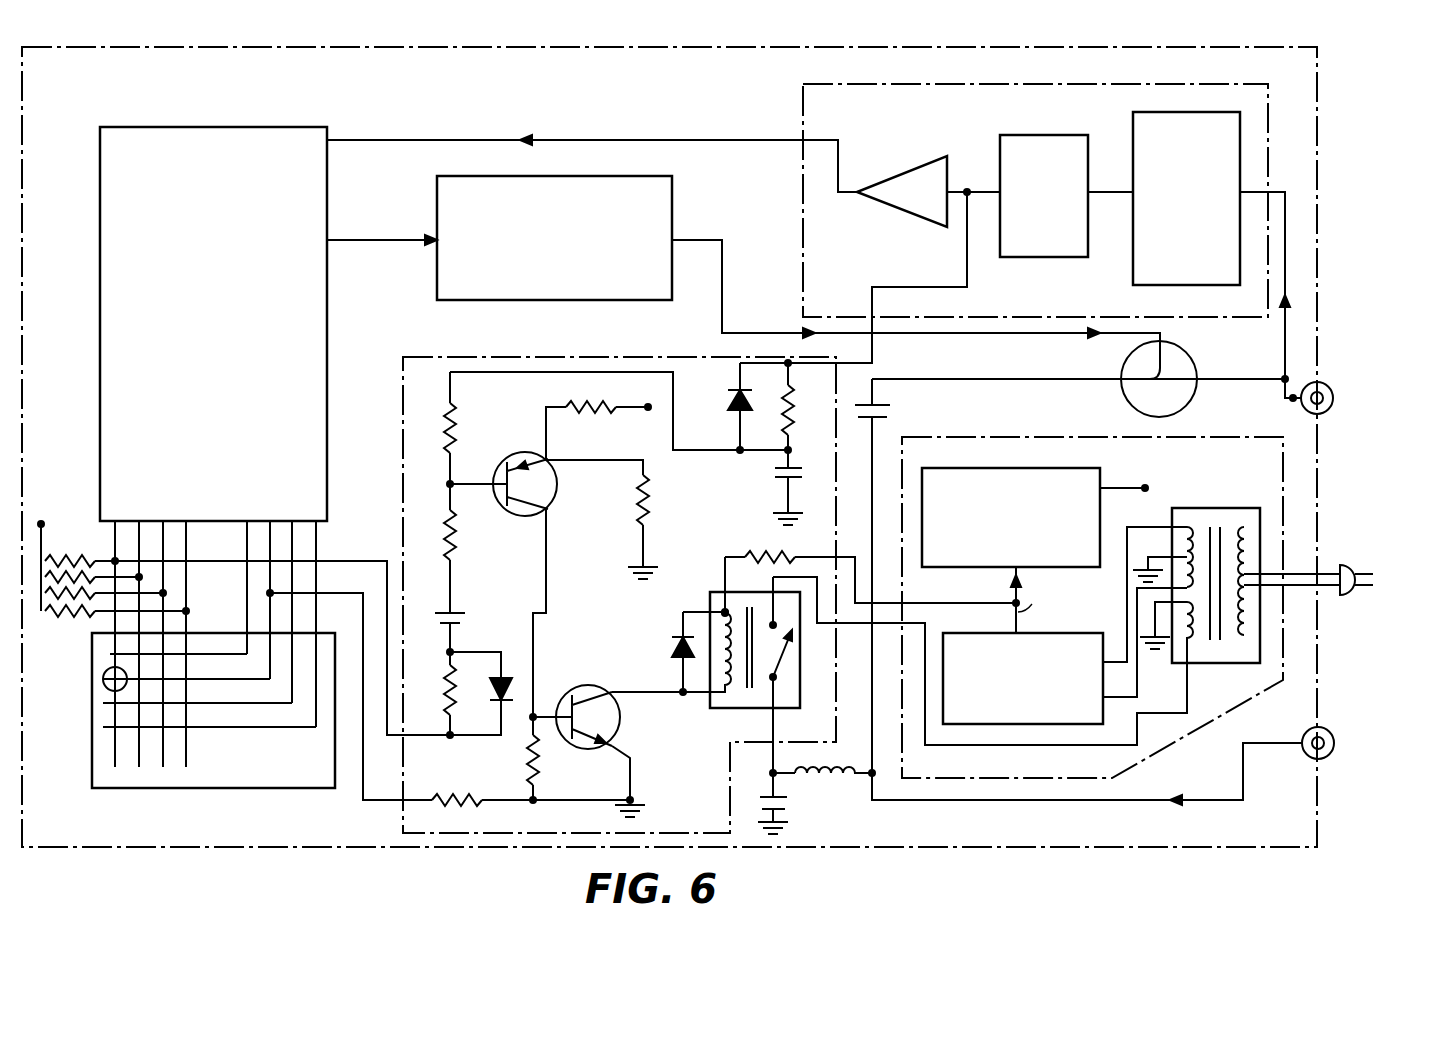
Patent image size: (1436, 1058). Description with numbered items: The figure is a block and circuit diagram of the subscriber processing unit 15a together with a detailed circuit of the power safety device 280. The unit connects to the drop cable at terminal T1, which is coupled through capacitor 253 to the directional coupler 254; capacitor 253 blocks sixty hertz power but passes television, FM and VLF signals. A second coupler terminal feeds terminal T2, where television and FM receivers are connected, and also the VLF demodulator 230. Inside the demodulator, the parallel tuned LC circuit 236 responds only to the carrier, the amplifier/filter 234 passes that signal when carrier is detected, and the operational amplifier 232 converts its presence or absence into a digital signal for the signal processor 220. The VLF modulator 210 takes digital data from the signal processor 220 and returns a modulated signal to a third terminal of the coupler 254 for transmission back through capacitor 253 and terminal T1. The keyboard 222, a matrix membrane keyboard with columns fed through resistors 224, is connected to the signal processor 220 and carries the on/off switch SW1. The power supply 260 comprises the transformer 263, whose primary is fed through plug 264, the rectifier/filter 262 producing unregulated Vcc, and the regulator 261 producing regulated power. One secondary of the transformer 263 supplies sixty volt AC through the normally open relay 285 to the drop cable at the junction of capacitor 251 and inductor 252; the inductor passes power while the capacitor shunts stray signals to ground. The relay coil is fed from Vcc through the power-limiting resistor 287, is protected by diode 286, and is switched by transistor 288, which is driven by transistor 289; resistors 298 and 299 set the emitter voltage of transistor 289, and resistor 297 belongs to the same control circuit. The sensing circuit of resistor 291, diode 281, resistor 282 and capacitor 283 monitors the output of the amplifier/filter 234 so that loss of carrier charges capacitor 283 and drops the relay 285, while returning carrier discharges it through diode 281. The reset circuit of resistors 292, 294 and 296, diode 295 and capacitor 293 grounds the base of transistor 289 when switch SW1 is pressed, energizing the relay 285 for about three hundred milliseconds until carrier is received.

The subscriber processing unit 15a is at (78, 852).
The signal processor 220 is at (174, 127).
The VLF modulator 210 is at (437, 205).
The VLF demodulator 230 is at (1022, 242).
The operational amplifier 232 is at (905, 212).
The amplifier/filter circuit 234 is at (1077, 258).
The parallel tuned LC circuit 236 is at (1242, 282).
The resistors 224 is at (72, 542).
The keyboard 222 is at (190, 728).
The on/off switch SW1 is at (103, 679).
The power safety device 280 is at (403, 385).
The diode 281 is at (737, 401).
The resistor 282 is at (791, 416).
The capacitor 283 is at (774, 470).
The relay 285 is at (748, 708).
The diode 286 is at (672, 649).
The power-limiting resistor 287 is at (768, 556).
The transistor 288 is at (600, 687).
The transistor 289 is at (556, 502).
The resistor 291 is at (456, 427).
The resistor 292 is at (460, 539).
The capacitor 293 is at (495, 596).
The resistor 294 is at (447, 712).
The diode 295 is at (507, 681).
The resistor 296 is at (484, 790).
The resistor 297 is at (548, 762).
The resistor 298 is at (580, 417).
The resistor 299 is at (652, 508).
The capacitor 251 is at (788, 800).
The inductor 252 is at (835, 777).
The capacitor 253 is at (885, 414).
The directional coupler 254 is at (1197, 367).
The power supply 260 is at (1066, 437).
The regulator 261 is at (1095, 468).
The rectifier/filter 262 is at (1057, 727).
The transformer 263 is at (1244, 507).
The plug 264 is at (1364, 556).
The terminal T1 is at (1322, 727).
The terminal T2 is at (1344, 413).